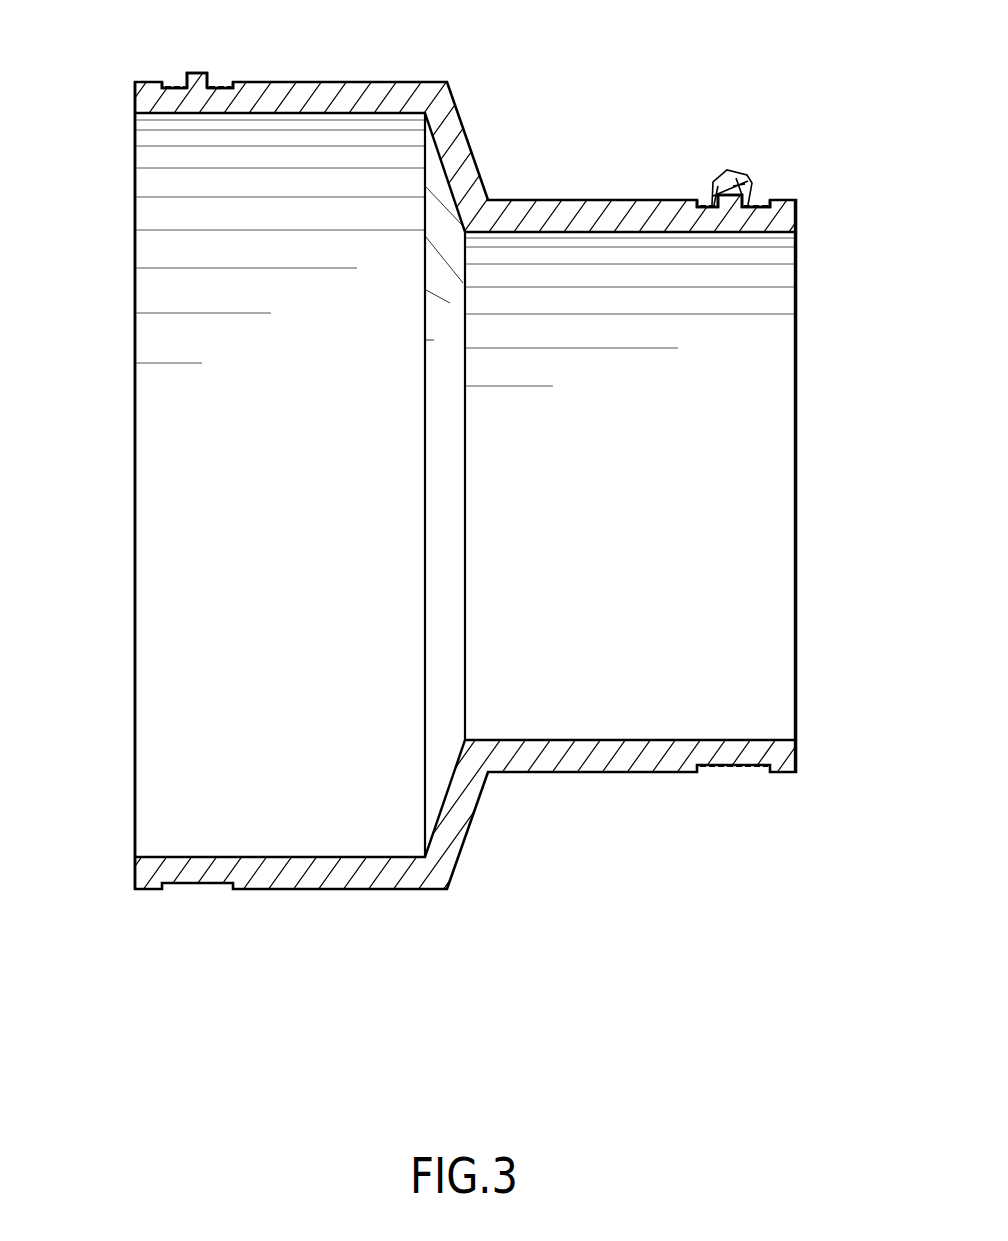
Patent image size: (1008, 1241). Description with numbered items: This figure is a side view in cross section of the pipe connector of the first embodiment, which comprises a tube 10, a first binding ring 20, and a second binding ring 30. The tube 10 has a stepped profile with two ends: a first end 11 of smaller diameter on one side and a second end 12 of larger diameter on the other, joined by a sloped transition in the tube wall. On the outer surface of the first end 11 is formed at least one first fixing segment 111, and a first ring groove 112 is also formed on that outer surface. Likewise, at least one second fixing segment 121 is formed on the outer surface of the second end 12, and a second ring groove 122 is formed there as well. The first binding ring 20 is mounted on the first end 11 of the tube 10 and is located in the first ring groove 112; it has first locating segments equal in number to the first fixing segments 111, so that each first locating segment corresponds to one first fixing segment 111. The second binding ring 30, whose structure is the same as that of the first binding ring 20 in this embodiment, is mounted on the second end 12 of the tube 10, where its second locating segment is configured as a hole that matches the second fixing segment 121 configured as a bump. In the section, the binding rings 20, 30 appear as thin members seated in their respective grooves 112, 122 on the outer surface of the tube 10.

The tube 10 is at (457, 822).
The first end 11 is at (796, 610).
The second end 12 is at (134, 713).
The first fixing segment 111 is at (749, 178).
The first ring groove 112 is at (768, 201).
The second fixing segment 121 is at (195, 73).
The second ring groove 122 is at (162, 87).
The first binding ring 20 is at (732, 767).
The second binding ring 30 is at (193, 884).